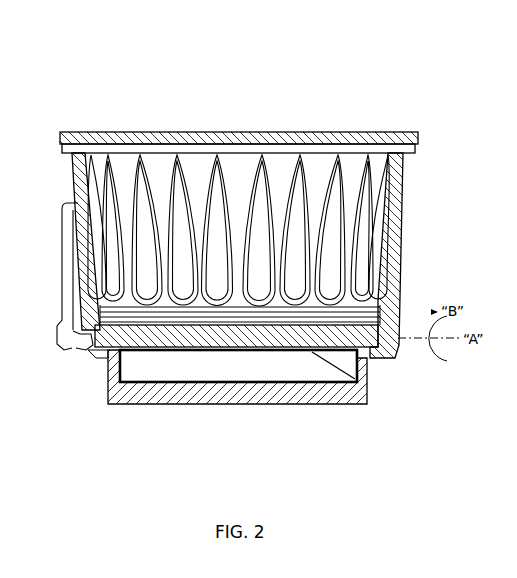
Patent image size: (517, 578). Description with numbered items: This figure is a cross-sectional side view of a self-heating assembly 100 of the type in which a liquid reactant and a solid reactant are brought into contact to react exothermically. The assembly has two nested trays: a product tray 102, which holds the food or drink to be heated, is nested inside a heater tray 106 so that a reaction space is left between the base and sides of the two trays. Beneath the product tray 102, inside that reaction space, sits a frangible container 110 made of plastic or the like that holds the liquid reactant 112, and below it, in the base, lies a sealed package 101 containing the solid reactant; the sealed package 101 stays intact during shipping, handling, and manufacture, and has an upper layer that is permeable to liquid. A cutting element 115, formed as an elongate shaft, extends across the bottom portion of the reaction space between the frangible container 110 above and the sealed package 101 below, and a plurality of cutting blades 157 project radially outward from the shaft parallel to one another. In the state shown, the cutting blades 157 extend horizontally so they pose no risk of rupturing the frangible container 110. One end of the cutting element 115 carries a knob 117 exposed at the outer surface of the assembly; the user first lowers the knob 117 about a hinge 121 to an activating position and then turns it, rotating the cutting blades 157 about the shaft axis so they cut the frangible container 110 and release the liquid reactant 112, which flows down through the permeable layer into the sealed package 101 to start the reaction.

The self-heating assembly 100 is at (101, 82).
The product tray 102 is at (397, 197).
The heater tray 106 is at (400, 242).
The frangible container 110 is at (110, 366).
The liquid reactant 112 is at (168, 313).
The cutting element 115 is at (88, 352).
The knob 117 is at (62, 296).
The hinge 121 is at (74, 343).
The cutting blades 157 is at (370, 379).
The sealed package 101 is at (200, 398).